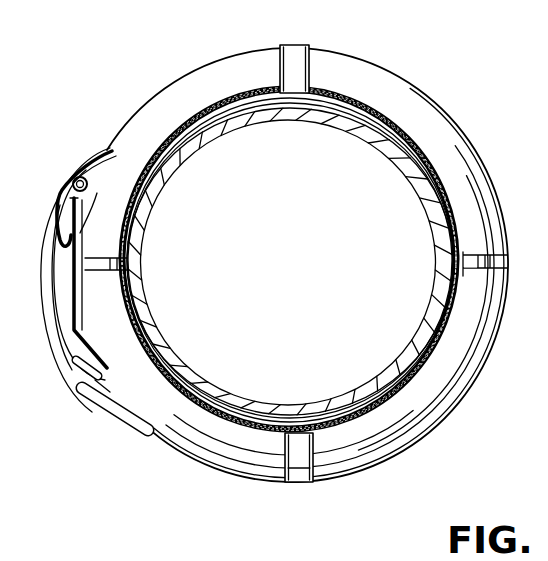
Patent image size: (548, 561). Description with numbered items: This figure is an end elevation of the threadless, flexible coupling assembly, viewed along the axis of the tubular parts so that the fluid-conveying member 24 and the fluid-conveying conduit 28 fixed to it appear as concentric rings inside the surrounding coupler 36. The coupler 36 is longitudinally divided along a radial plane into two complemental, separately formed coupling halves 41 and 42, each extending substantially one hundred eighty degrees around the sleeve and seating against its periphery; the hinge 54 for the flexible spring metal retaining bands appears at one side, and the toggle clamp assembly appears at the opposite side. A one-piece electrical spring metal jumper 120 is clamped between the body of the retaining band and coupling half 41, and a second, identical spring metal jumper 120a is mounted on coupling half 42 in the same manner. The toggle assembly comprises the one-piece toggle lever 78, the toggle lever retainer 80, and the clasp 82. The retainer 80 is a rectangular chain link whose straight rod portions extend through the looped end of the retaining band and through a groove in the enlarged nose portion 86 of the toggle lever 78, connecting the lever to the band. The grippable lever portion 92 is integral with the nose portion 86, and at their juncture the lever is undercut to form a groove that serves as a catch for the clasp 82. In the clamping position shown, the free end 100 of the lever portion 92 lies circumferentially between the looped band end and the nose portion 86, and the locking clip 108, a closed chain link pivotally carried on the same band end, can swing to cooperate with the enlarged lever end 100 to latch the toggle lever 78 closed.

The coupler 36 is at (391, 62).
The coupling half 42 is at (431, 107).
The coupling half 41 is at (396, 438).
The fluid-conveying member 24 is at (200, 128).
The fluid-conveying conduit 28 is at (324, 117).
The spring metal jumper 120a is at (302, 50).
The spring metal jumper 120 is at (302, 466).
The hinge 54 is at (501, 263).
The toggle lever 78 is at (50, 183).
The clasp 82 is at (88, 167).
The nose portion 86 is at (97, 170).
The toggle lever retainer 80 is at (72, 287).
The lever portion 92 is at (47, 293).
The free end 100 is at (84, 395).
The locking clip 108 is at (72, 368).